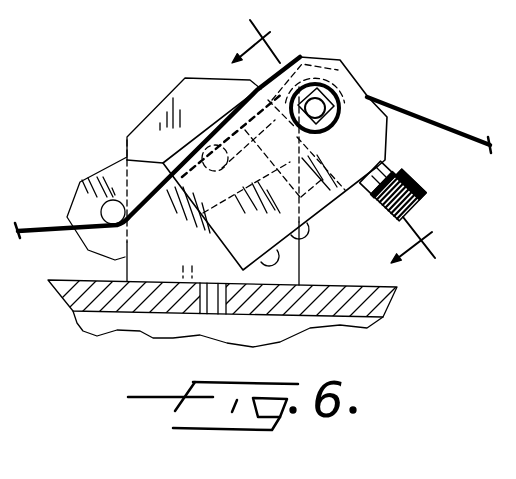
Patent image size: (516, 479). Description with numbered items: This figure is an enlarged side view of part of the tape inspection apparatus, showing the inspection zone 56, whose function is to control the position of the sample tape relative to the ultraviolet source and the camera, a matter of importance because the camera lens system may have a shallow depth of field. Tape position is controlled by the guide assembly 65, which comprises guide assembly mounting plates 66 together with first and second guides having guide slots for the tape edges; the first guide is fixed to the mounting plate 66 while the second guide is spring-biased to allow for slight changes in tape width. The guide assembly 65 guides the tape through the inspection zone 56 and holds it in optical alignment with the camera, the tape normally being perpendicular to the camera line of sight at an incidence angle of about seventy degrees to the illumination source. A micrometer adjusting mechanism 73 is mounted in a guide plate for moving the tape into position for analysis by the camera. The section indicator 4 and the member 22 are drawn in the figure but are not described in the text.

The section line indicating view of FIG. 4 is at (346, 131).
The rod 22 is at (411, 111).
The inspection zone 56 is at (198, 66).
The guide assembly 65 is at (331, 196).
The guide assembly mounting plate 66 is at (80, 195).
The micrometer adjusting mechanism 73 is at (397, 172).